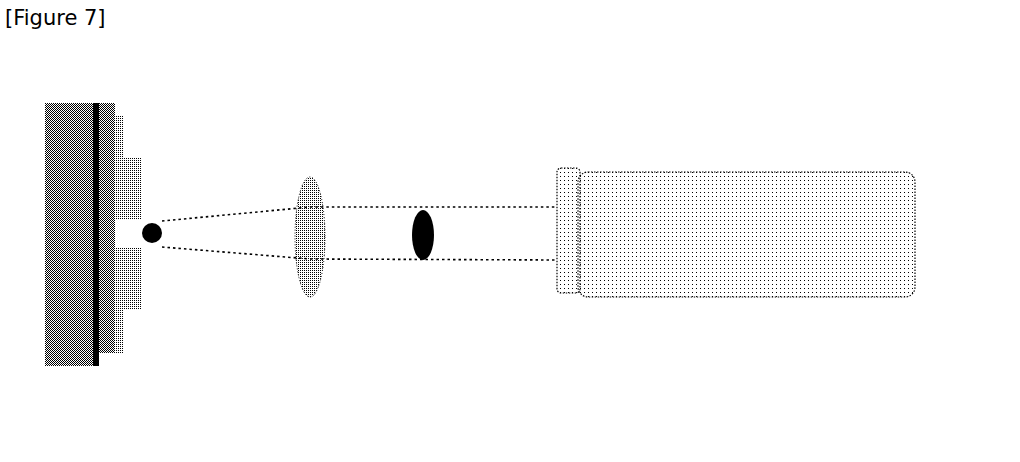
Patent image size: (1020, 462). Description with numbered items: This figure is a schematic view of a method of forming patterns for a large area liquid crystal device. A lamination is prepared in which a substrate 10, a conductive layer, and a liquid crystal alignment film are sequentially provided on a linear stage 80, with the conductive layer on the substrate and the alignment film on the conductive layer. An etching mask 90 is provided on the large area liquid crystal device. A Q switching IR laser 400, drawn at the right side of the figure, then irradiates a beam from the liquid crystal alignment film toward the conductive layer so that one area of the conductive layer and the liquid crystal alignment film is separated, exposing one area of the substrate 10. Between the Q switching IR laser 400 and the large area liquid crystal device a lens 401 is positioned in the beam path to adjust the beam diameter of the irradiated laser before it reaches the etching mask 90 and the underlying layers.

The substrate 10 is at (98, 127).
The linear stage 80 is at (88, 362).
The etching mask 90 is at (143, 187).
The Q switching IR laser 400 is at (720, 168).
The lens 401 is at (325, 195).